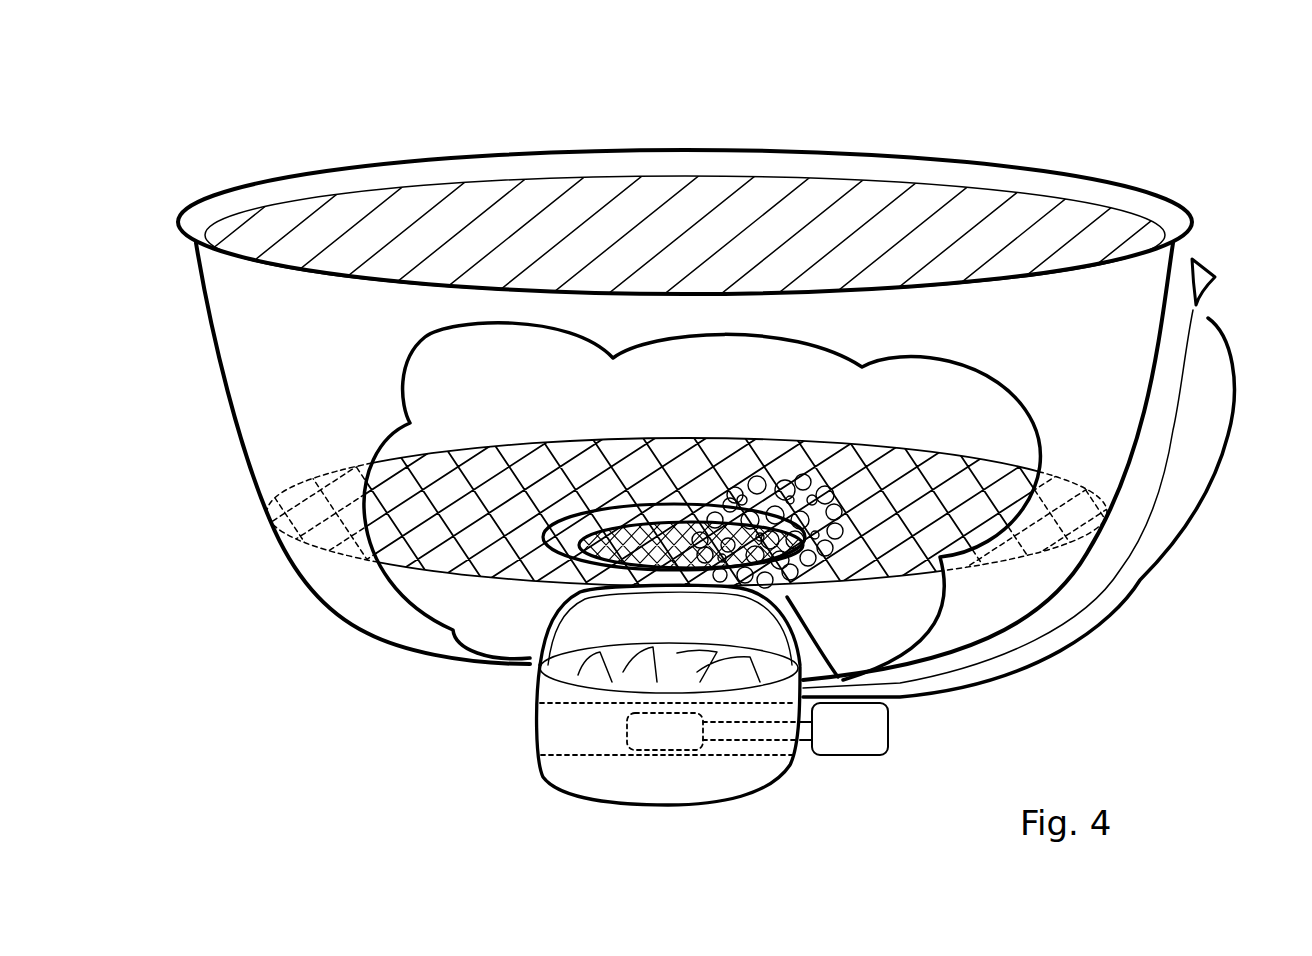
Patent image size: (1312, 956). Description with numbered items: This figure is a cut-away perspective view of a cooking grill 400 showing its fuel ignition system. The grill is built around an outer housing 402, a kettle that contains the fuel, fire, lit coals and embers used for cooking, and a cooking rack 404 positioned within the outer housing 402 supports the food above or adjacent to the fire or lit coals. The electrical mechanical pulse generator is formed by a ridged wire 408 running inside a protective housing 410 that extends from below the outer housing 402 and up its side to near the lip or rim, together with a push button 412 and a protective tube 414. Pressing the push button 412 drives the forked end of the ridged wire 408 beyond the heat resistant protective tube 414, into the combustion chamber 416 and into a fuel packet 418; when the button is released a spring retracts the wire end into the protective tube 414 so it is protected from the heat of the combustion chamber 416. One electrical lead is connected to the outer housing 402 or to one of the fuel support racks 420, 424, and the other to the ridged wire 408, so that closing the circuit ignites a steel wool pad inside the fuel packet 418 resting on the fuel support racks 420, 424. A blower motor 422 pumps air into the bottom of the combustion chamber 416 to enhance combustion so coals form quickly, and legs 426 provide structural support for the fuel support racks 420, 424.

The cooking grill 400 is at (1080, 76).
The outer housing 402 is at (243, 463).
The cooking rack 404 is at (645, 203).
The ridged wire 408 is at (1163, 480).
The protective housing 410 is at (1100, 630).
The push button 412 is at (1203, 263).
The protective tube 414 is at (827, 647).
The combustion chamber 416 is at (625, 523).
The fuel packet 418 is at (807, 477).
The fuel support rack 420 is at (680, 533).
The blower motor 422 is at (863, 733).
The fuel support rack 424 is at (877, 477).
The legs 426 is at (763, 603).